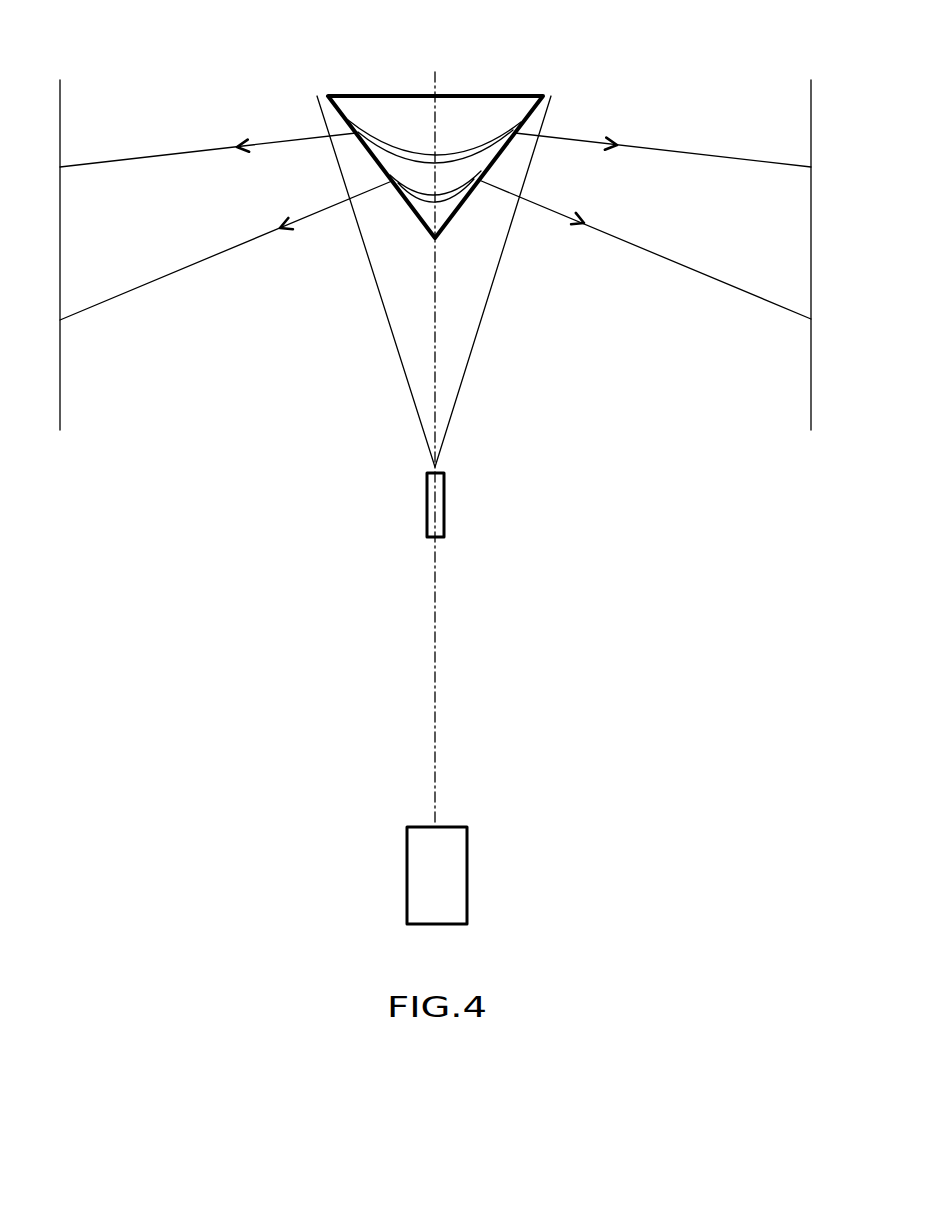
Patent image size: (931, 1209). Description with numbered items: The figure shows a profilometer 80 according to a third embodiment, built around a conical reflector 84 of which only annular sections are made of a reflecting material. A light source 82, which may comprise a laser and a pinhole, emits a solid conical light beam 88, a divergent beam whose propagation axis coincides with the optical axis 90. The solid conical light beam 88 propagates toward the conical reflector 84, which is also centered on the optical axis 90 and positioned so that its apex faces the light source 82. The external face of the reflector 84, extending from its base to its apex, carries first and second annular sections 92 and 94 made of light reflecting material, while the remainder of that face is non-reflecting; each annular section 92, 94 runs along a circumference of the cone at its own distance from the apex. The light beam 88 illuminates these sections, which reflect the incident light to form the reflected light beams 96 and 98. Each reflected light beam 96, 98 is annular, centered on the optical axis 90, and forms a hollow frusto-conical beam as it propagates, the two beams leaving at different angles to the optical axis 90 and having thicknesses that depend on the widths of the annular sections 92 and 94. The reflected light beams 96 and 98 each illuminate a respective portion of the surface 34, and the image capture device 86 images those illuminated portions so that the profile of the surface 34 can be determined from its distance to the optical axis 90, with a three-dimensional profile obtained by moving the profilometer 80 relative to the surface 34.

The surface 34 is at (60, 118).
The profilometer 80 is at (663, 648).
The light source 82 is at (438, 511).
The conical reflector 84 is at (427, 113).
The image capture device 86 is at (462, 877).
The solid conical light beam 88 is at (475, 295).
The optical axis 90 is at (435, 613).
The first annular section 92 is at (422, 195).
The second annular section 94 is at (463, 152).
The reflected light beam 96 is at (168, 273).
The reflected light beam 98 is at (193, 153).